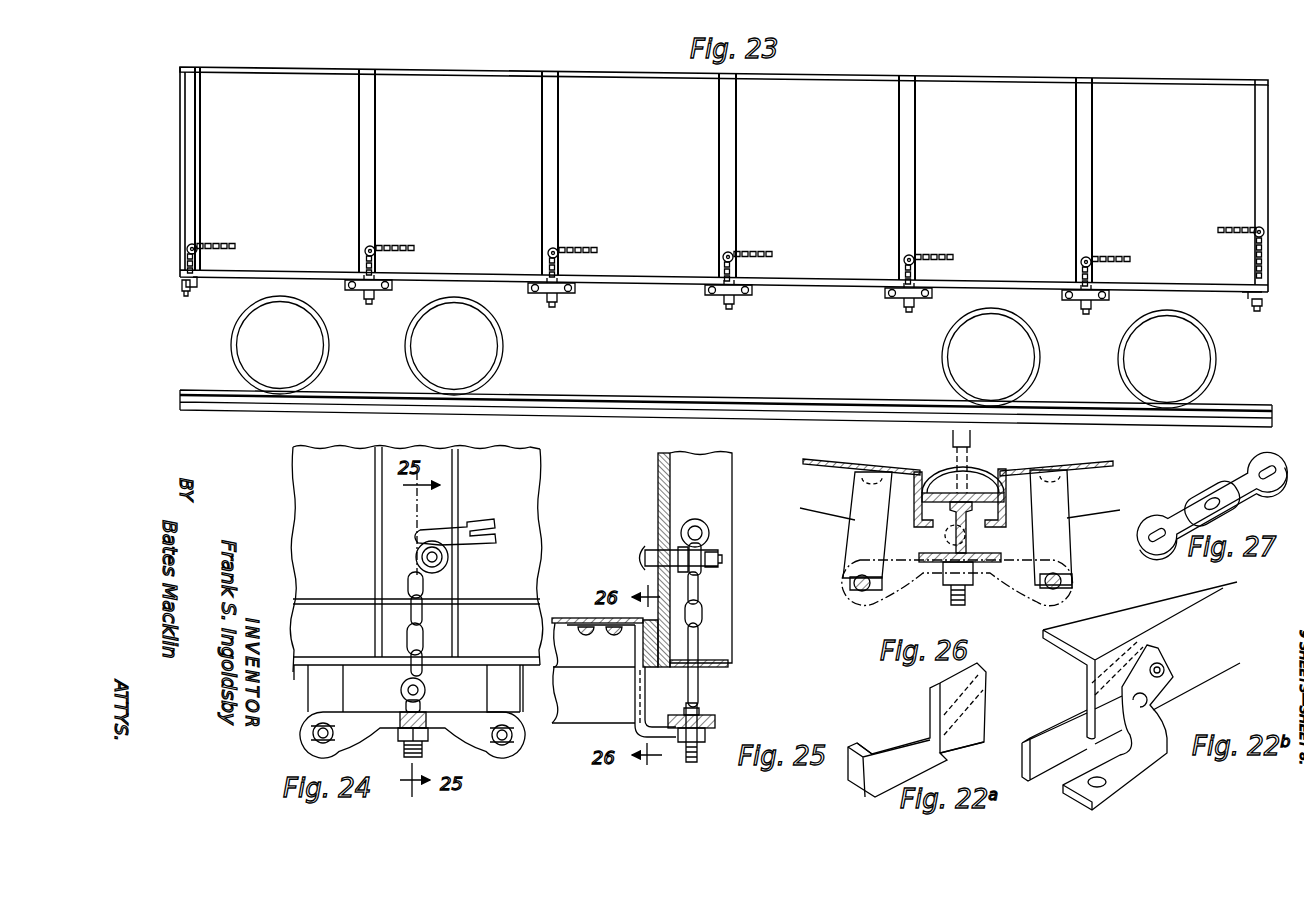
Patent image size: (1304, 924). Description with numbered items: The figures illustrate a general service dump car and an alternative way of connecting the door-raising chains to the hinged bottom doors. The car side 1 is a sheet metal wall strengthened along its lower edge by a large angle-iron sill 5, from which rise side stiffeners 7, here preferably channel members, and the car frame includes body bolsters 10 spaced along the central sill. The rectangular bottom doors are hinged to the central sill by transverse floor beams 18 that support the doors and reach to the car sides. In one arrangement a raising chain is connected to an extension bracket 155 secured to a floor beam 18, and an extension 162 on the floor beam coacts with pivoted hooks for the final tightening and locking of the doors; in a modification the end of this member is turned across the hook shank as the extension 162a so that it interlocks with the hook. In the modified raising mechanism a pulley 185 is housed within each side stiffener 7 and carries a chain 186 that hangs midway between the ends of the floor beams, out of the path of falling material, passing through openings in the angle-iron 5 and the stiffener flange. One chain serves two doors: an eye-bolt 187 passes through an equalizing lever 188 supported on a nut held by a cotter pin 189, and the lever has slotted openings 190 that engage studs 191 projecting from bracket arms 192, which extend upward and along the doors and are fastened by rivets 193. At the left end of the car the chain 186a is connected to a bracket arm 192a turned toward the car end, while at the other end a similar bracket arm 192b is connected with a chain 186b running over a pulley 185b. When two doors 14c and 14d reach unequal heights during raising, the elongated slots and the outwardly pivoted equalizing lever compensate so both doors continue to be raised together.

In FIG. 23, the side 1 is at (720, 172).
In FIG. 24, the side 1 is at (416, 523).
In FIG. 25, the side 1 is at (658, 468).
In FIG. 24, the angle-iron side sill member 5 is at (503, 650).
In FIG. 25, the angle-iron side sill member 5 is at (720, 661).
In FIG. 23, the side stiffener 7 is at (738, 135).
In FIG. 24, the side stiffener 7 is at (375, 488).
In FIG. 25, the side stiffener 7 is at (701, 558).
In FIG. 26, the body bolster 10 is at (967, 492).
In FIG. 26, the door 14c is at (1068, 464).
In FIG. 26, the door 14d is at (901, 470).
In FIG. 22B, the floor beam 18 is at (1141, 660).
In FIG. 22B, the extension bracket 155 is at (1127, 762).
In FIG. 22B, the extension 162 is at (1050, 727).
In FIG. 22A, the extension with turned end 162a is at (908, 747).
In FIG. 23, the pulley 185 is at (734, 259).
In FIG. 24, the pulley 185 is at (448, 562).
In FIG. 25, the pulley 185 is at (722, 557).
In FIG. 23, the pulley 185b is at (1255, 228).
In FIG. 23, the chain 186 is at (748, 252).
In FIG. 24, the chain 186 is at (482, 538).
In FIG. 25, the chain 186 is at (702, 590).
In FIG. 23, the chain 186a is at (218, 244).
In FIG. 23, the chain 186b is at (1233, 237).
In FIG. 24, the eye-bolt 187 is at (425, 692).
In FIG. 23, the equalizing lever 188 is at (552, 302).
In FIG. 24, the equalizing lever 188 is at (480, 722).
In FIG. 25, the equalizing lever 188 is at (691, 721).
In FIG. 26, the equalizing lever 188 is at (1013, 568).
In FIG. 27, the equalizing lever 188 is at (1174, 507).
In FIG. 24, the cotter pin 189 is at (400, 750).
In FIG. 25, the cotter pin 189 is at (689, 763).
In FIG. 24, the slotted opening 190 is at (495, 742).
In FIG. 27, the slotted opening 190 is at (1160, 545).
In FIG. 24, the stud 191 is at (512, 746).
In FIG. 24, the bracket arm 192 is at (336, 683).
In FIG. 25, the bracket arm 192 is at (636, 686).
In FIG. 26, the bracket arm 192 is at (1063, 538).
In FIG. 23, the bracket arm 192a is at (198, 289).
In FIG. 23, the bracket arm 192b is at (1243, 304).
In FIG. 25, the rivets 193 is at (600, 645).